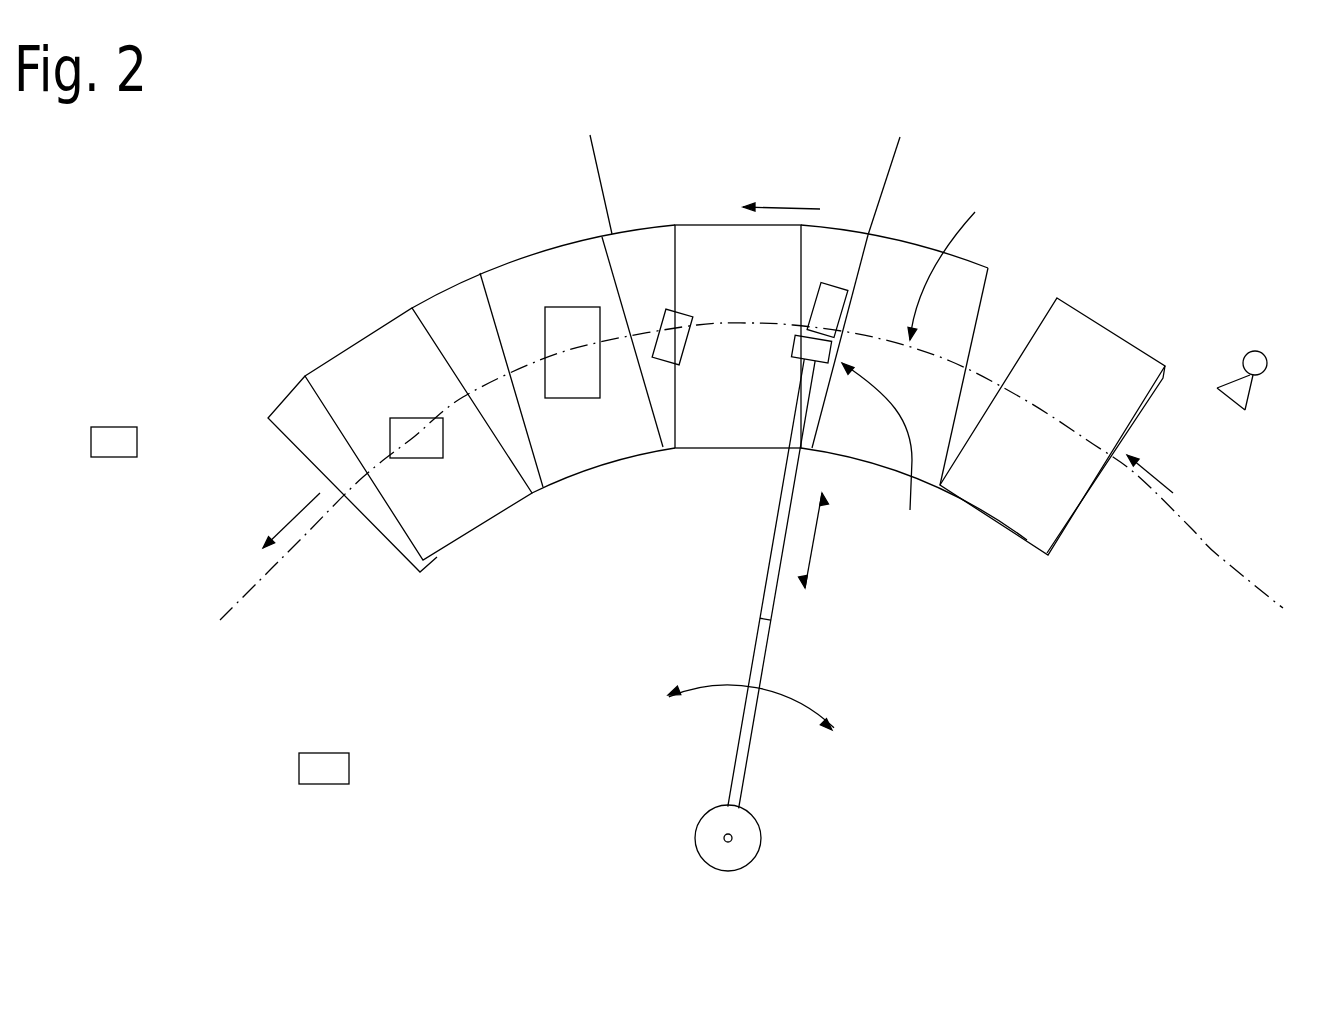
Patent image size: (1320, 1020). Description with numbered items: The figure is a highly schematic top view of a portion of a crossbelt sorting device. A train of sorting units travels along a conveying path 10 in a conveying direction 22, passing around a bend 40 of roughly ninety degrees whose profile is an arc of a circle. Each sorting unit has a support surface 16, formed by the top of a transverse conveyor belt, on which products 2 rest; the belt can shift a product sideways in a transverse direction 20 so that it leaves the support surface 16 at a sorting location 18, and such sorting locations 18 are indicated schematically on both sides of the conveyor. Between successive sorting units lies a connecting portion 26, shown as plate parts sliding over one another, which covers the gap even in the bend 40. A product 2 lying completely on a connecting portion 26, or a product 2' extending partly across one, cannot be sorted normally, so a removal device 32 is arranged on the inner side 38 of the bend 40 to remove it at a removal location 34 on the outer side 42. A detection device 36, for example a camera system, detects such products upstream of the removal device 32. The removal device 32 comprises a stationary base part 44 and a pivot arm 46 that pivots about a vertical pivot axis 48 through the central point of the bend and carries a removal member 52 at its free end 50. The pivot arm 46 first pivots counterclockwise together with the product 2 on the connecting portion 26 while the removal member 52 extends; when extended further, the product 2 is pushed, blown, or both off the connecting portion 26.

The product 2 is at (851, 309).
The product 2' is at (692, 317).
The conveying path 10 is at (240, 600).
The support surface 16 is at (742, 412).
The sorting location 18 is at (220, 605).
The transverse direction 20 is at (815, 540).
The conveying direction 22 is at (778, 207).
The connecting portion 26 is at (472, 327).
The removal device 32 is at (767, 757).
The removal location 34 is at (750, 162).
The detection device 36 is at (1262, 369).
The inner side 38 is at (624, 644).
The bend 40 is at (957, 268).
The outer side 42 is at (481, 227).
The base part 44 is at (760, 835).
The pivot arm 46 is at (780, 630).
The pivot axis 48 is at (724, 842).
The free end 50 is at (800, 374).
The removal member 52 is at (885, 449).